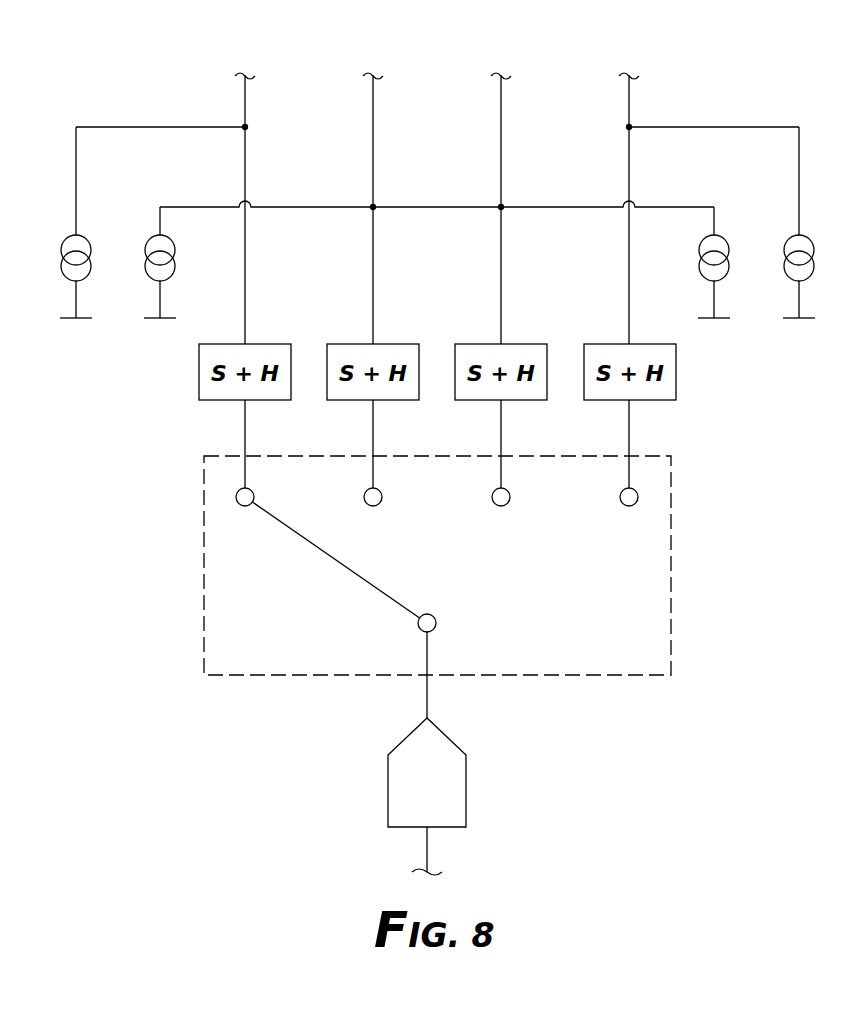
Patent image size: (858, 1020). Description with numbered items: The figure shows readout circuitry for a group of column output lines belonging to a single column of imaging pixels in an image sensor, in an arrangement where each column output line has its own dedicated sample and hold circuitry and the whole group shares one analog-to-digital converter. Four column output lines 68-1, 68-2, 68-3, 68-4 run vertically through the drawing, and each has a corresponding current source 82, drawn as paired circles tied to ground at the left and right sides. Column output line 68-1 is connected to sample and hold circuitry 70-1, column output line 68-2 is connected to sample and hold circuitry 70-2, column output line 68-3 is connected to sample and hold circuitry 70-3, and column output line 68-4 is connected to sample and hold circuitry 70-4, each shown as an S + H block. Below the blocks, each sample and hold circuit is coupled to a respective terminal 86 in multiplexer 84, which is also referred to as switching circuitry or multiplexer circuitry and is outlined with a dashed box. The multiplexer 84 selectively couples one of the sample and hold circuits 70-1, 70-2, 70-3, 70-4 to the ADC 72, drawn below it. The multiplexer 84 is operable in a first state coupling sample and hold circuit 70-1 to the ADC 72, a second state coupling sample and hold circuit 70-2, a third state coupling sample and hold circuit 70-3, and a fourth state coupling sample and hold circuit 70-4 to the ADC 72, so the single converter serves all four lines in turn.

The column output line 68-1 is at (243, 88).
The column output line 68-2 is at (371, 88).
The column output line 68-3 is at (499, 88).
The column output line 68-4 is at (627, 88).
The sample and hold circuitry 70-1 is at (262, 344).
The sample and hold circuitry 70-2 is at (398, 344).
The sample and hold circuitry 70-3 is at (532, 344).
The sample and hold circuitry 70-4 is at (676, 383).
The ADC 72 is at (467, 786).
The current source 82 is at (141, 281).
The multiplexer 84 is at (671, 515).
The terminal 86 is at (237, 503).